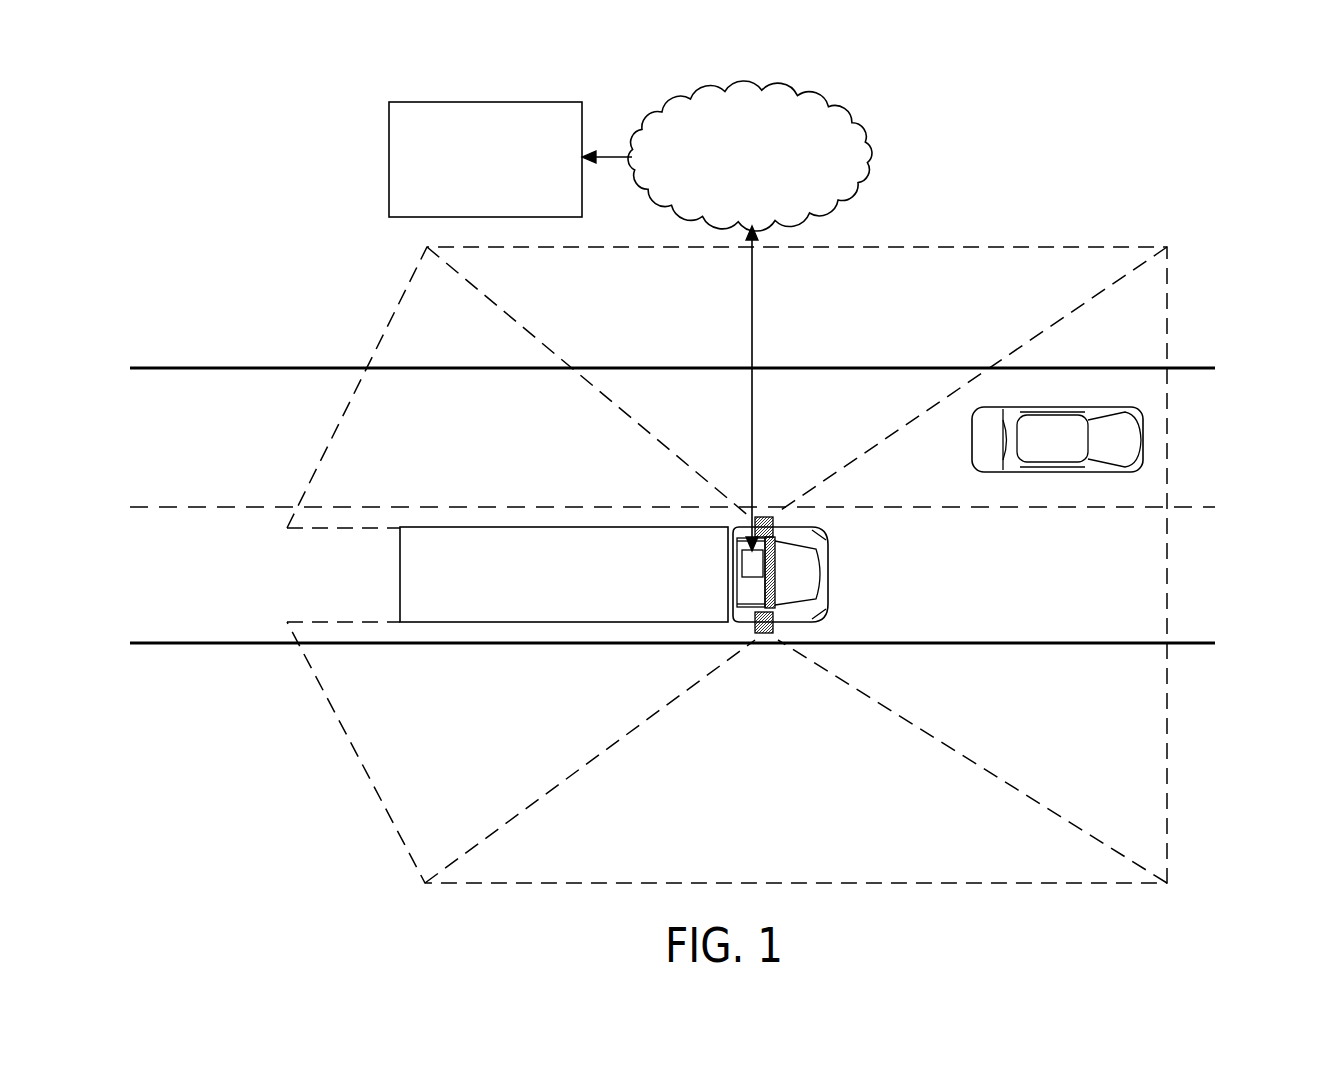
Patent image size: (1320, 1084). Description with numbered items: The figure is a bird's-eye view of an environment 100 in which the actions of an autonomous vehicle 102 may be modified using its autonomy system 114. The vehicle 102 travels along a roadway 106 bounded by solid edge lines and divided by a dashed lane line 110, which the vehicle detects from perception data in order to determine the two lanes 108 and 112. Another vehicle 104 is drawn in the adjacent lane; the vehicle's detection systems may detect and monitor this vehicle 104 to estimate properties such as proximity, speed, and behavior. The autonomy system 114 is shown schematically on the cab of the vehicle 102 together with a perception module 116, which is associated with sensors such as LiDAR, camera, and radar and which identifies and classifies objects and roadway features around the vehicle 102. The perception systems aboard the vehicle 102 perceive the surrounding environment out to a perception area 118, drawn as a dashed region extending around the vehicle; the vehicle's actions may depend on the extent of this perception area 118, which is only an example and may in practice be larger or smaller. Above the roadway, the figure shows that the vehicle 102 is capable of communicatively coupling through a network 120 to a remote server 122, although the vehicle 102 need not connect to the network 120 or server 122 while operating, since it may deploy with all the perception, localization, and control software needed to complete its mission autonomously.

The environment 100 is at (1185, 88).
The autonomous vehicle 102 is at (614, 595).
The vehicle 104 is at (998, 473).
The roadway 106 is at (172, 368).
The lane 108 is at (175, 436).
The lane line 110 is at (228, 507).
The lane 112 is at (178, 592).
The autonomy system 114 is at (751, 545).
The perception module 116 is at (762, 633).
The perception area 118 is at (944, 246).
The network 120 is at (727, 316).
The server 122 is at (485, 159).